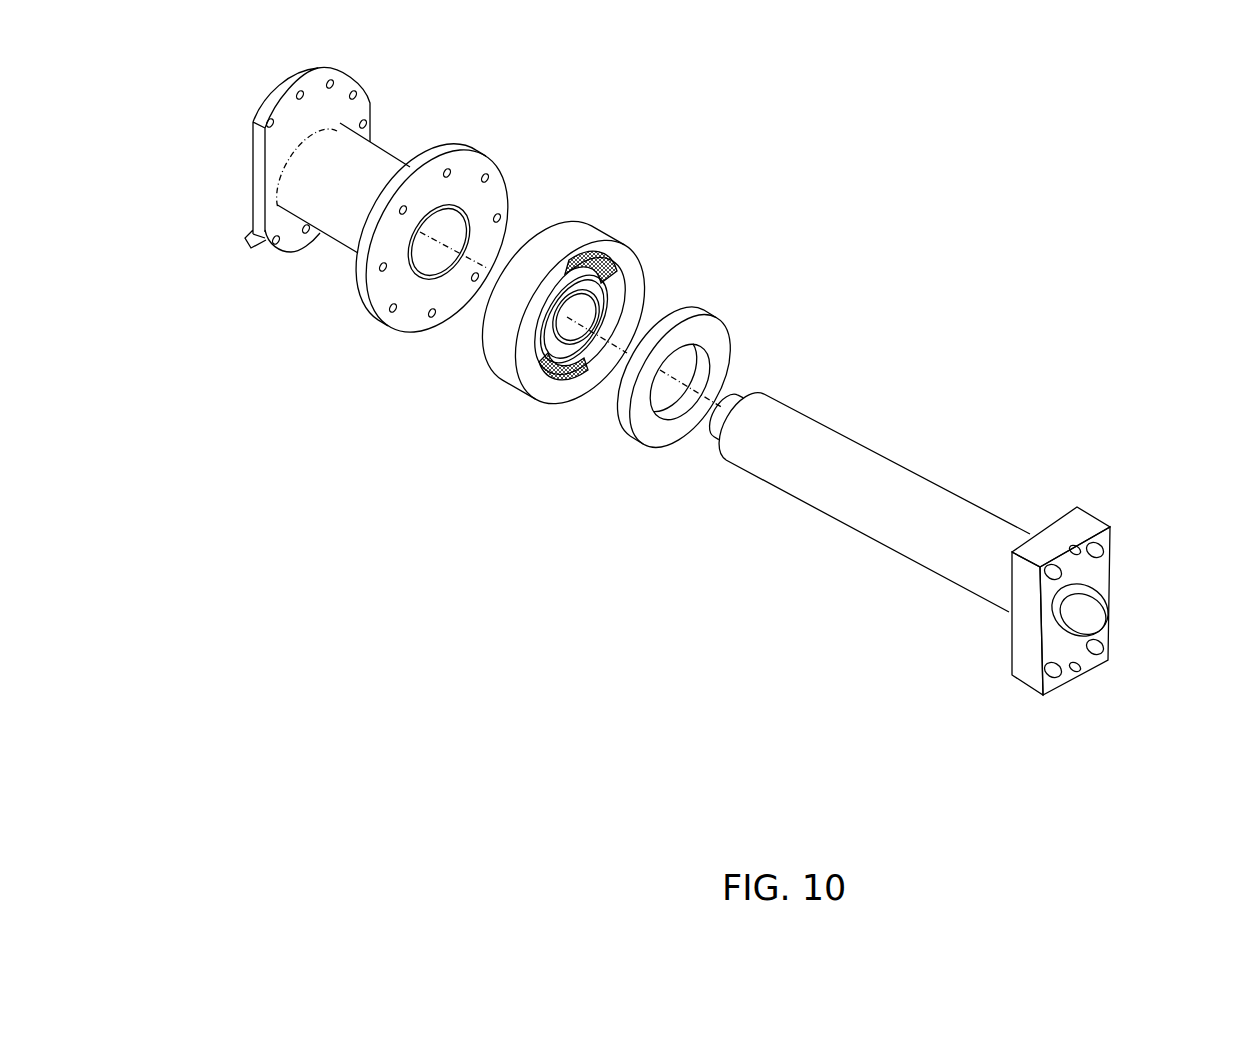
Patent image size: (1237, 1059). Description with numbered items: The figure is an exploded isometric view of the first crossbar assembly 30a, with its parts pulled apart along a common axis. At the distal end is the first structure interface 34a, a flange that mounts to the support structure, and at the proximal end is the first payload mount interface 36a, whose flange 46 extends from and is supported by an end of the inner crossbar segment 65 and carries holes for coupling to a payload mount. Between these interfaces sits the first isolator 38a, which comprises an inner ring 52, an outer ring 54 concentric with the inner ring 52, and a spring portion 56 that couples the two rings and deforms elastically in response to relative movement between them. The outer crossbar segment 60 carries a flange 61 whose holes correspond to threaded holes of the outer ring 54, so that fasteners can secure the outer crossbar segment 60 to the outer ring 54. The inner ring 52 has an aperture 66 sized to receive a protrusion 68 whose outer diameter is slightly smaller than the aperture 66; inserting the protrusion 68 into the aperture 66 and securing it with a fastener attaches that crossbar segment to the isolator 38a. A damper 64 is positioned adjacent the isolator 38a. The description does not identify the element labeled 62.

The first crossbar assembly 30a is at (907, 157).
The first structure interface 34a is at (290, 85).
The first payload mount interface 36a is at (1085, 668).
The first isolator 38a is at (443, 443).
The flange 46 is at (1028, 604).
The inner ring 52 is at (580, 350).
The outer ring 54 is at (573, 235).
The spring portion 56 is at (605, 270).
The outer crossbar segment 60 is at (342, 228).
The flange 61 is at (495, 198).
The mounting flange 62 is at (383, 268).
The damper 64 is at (633, 407).
The inner crossbar segment 65 is at (923, 520).
The aperture 66 is at (587, 325).
The protrusion 68 is at (727, 427).